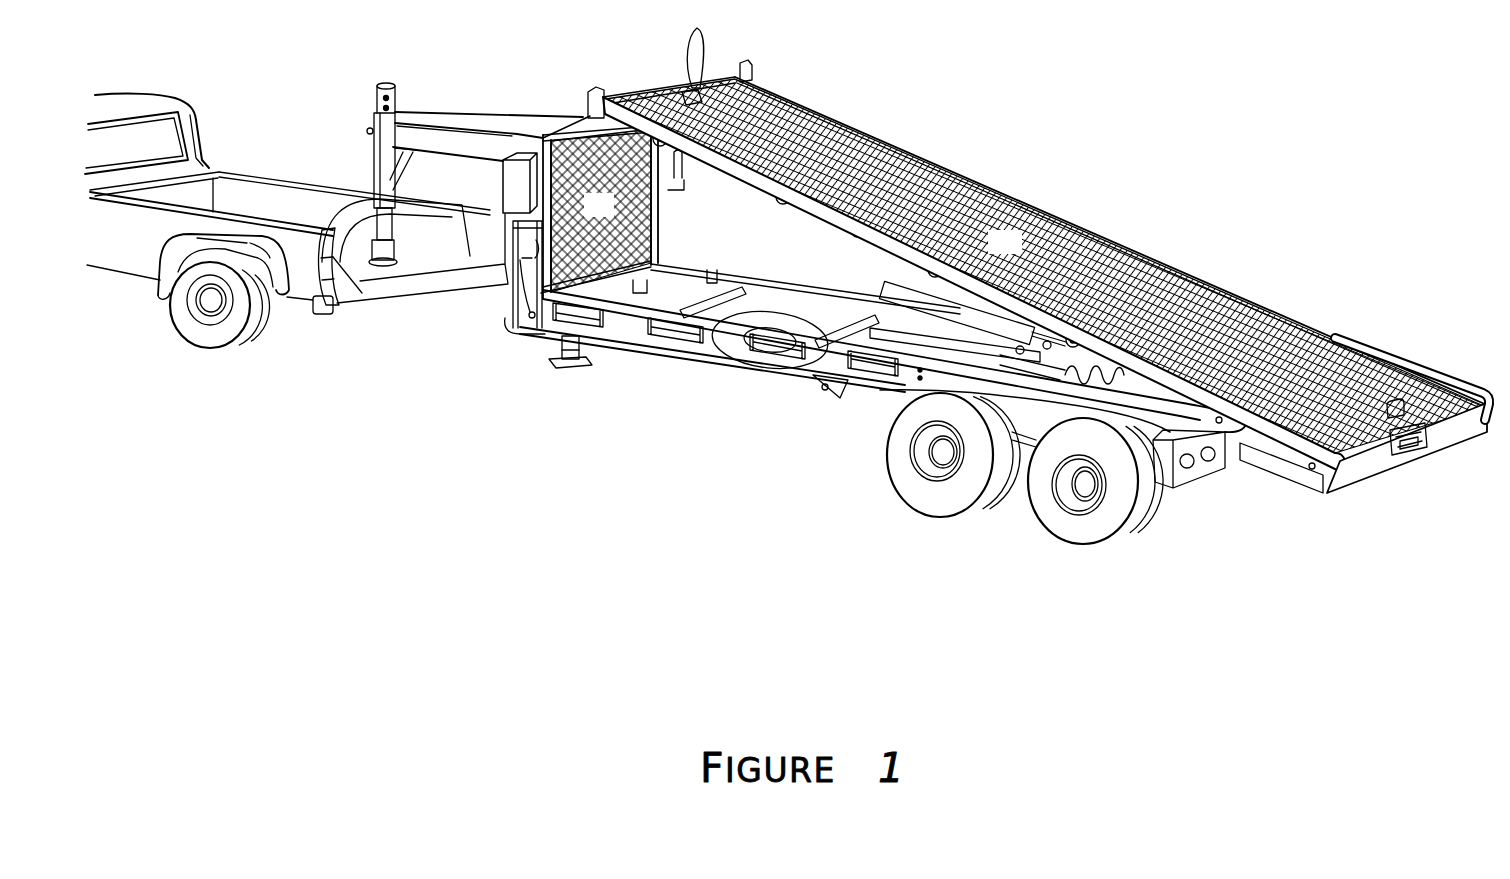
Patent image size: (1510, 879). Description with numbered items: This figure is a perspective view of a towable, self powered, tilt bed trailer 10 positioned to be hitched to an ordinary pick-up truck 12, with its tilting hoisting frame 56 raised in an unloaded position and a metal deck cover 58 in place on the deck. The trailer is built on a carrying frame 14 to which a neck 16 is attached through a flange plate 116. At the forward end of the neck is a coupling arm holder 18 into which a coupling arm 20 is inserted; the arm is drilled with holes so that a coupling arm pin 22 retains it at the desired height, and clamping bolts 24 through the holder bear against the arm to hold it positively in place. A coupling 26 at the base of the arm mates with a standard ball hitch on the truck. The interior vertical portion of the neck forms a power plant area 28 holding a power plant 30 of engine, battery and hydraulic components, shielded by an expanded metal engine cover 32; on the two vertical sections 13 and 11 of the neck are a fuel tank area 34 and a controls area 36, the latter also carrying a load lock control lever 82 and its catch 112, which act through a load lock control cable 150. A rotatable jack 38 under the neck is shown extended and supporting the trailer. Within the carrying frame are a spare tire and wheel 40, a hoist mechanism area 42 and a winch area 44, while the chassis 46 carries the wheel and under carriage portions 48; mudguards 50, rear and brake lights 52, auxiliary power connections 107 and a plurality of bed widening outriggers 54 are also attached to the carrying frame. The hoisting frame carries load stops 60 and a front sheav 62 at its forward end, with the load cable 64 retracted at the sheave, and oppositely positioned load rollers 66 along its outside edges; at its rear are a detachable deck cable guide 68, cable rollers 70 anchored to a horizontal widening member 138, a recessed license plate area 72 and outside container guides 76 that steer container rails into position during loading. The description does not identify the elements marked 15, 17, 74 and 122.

The tilt bed trailer 10 is at (960, 150).
The vertical section of neck 11 is at (528, 240).
The pick-up truck 12 is at (183, 90).
The vertical section of neck 13 is at (662, 244).
The carrying frame 14 is at (778, 290).
The gooseneck beam side face 15 is at (482, 134).
The neck 16 is at (416, 128).
The gooseneck beam top surface 17 is at (497, 118).
The coupling arm holder 18 is at (372, 163).
The coupling arm 20 is at (376, 109).
The coupling arm pin 22 is at (367, 131).
The clamping bolts 24 is at (400, 158).
The coupling 26 is at (375, 250).
The power plant area 28 is at (601, 210).
The power plant 30 is at (660, 210).
The expanded metal engine cover 32 is at (660, 232).
The fuel tank area 34 is at (684, 192).
The controls area 36 is at (512, 188).
The rotatable jack 38 is at (561, 348).
The spare tire and wheel 40 is at (742, 372).
The hoist mechanism area 42 is at (905, 296).
The winch area 44 is at (1085, 372).
The chassis 46 is at (1058, 438).
The wheel and under carriage portions 48 is at (1040, 513).
The mudguards 50 is at (1122, 408).
The rear and brake lights 52 is at (1212, 470).
The outriggers 54 is at (690, 347).
The hoisting frame 56 is at (826, 212).
The metal deck cover 58 is at (1046, 266).
The load stops 60 is at (592, 92).
The front sheav 62 is at (682, 95).
The load cable 64 is at (702, 34).
The load rollers 66 is at (776, 200).
The deck cable guide 68 is at (1462, 380).
The cable rollers 70 is at (1440, 448).
The recessed license plate area 72 is at (1430, 465).
The lift arm link 74 is at (1030, 364).
The outside container guides 76 is at (1310, 457).
The load lock control lever 82 is at (526, 328).
The auxiliary power connections 107 is at (916, 382).
The load lock control lever catch 112 is at (523, 266).
The flange plate 116 is at (506, 312).
The pivot pin 122 is at (1221, 424).
The horizontal widening member 138 is at (1362, 475).
The load lock control cable 150 is at (708, 284).